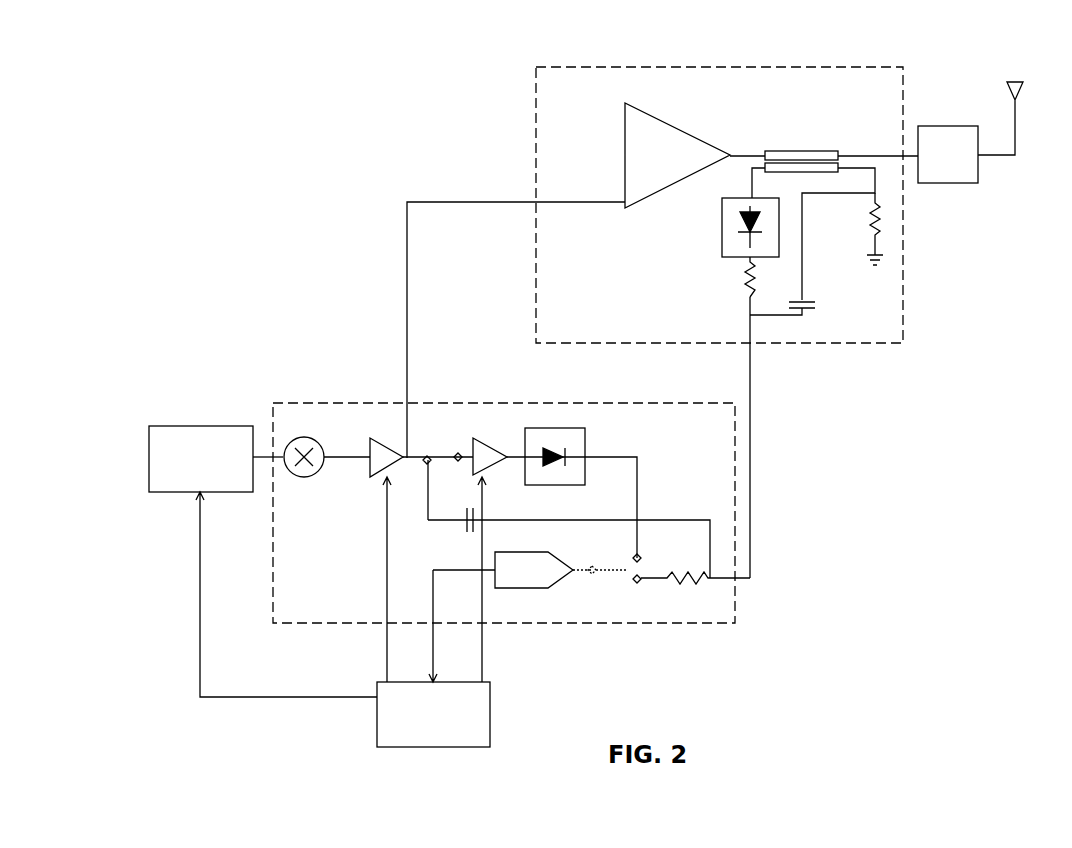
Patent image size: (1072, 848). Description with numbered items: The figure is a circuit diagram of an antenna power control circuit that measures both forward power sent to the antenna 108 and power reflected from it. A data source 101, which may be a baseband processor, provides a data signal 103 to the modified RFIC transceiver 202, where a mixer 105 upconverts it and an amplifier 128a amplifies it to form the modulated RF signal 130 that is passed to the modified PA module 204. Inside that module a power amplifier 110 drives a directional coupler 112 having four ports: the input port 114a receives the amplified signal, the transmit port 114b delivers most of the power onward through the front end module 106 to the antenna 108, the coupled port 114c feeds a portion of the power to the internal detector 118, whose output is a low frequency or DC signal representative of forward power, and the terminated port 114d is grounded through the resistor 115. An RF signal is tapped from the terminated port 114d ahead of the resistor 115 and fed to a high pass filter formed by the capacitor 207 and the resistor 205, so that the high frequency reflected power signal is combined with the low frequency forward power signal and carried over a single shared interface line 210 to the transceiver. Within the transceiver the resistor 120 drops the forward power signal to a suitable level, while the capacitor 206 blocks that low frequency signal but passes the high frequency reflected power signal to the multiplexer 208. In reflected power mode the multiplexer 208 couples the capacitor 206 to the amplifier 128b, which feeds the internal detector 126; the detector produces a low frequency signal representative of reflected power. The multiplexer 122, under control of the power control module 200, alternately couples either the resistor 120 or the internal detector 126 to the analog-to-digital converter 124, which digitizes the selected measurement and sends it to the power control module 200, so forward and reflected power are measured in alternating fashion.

The data source 101 is at (190, 425).
The data signal 103 is at (345, 456).
The mixer 105 is at (300, 478).
The front end module 106 is at (948, 183).
The antenna 108 is at (1015, 82).
The power amplifier 110 is at (625, 118).
The directional coupler 112 is at (800, 151).
The input port 114a is at (757, 135).
The transmit port 114b is at (846, 136).
The coupled port 114c is at (750, 170).
The terminated port 114d is at (830, 196).
The resistor 115 is at (884, 218).
The internal detector 118 is at (724, 252).
The resistor 120 is at (688, 590).
The multiplexer 122 is at (630, 585).
The analog-to-digital converter 124 is at (528, 588).
The internal detector 126 is at (582, 437).
The amplifier 128a is at (376, 474).
The amplifier 128b is at (487, 477).
The modulated RF signal 130 is at (405, 234).
The power control module 200 is at (377, 708).
The modified RFIC transceiver 202 is at (350, 403).
The modified PA module 204 is at (745, 67).
The resistor 205 is at (745, 283).
The capacitor 206 is at (465, 518).
The capacitor 207 is at (818, 310).
The multiplexer 208 is at (415, 450).
The shared interface line 210 is at (752, 448).